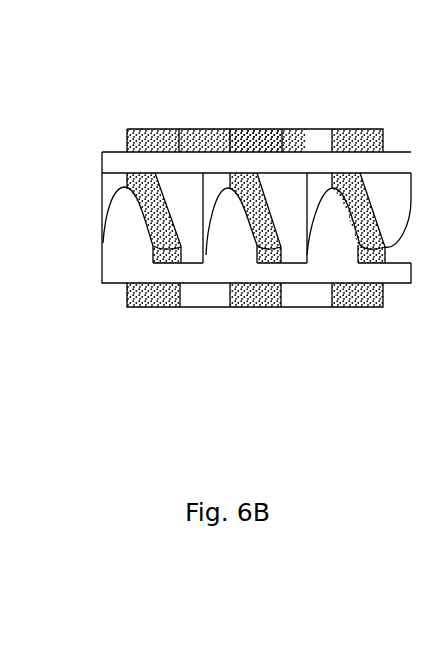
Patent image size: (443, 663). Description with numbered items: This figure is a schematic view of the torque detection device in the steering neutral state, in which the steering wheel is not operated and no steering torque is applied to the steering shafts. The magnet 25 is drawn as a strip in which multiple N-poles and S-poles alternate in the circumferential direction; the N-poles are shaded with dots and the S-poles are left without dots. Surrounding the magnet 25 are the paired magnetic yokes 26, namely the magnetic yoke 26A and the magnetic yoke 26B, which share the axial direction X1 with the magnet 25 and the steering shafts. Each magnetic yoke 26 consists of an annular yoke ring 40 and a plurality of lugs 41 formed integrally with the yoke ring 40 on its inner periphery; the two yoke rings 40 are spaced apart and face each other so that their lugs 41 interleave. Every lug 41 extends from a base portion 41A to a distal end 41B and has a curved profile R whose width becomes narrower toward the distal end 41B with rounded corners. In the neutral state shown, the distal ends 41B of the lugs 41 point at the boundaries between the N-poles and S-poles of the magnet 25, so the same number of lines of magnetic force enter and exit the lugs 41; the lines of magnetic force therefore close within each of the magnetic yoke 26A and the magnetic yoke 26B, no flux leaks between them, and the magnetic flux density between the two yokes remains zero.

The magnet 25 is at (320, 133).
The magnetic yoke 26 is at (231, 213).
The magnetic yoke 26A is at (114, 151).
The magnetic yoke 26B is at (112, 285).
The annular yoke ring 40 is at (312, 163).
The lug 41 is at (180, 218).
The base portion 41A is at (127, 262).
The distal end 41B is at (224, 197).
The curved profile R is at (211, 173).
The axial direction X1 is at (267, 3).